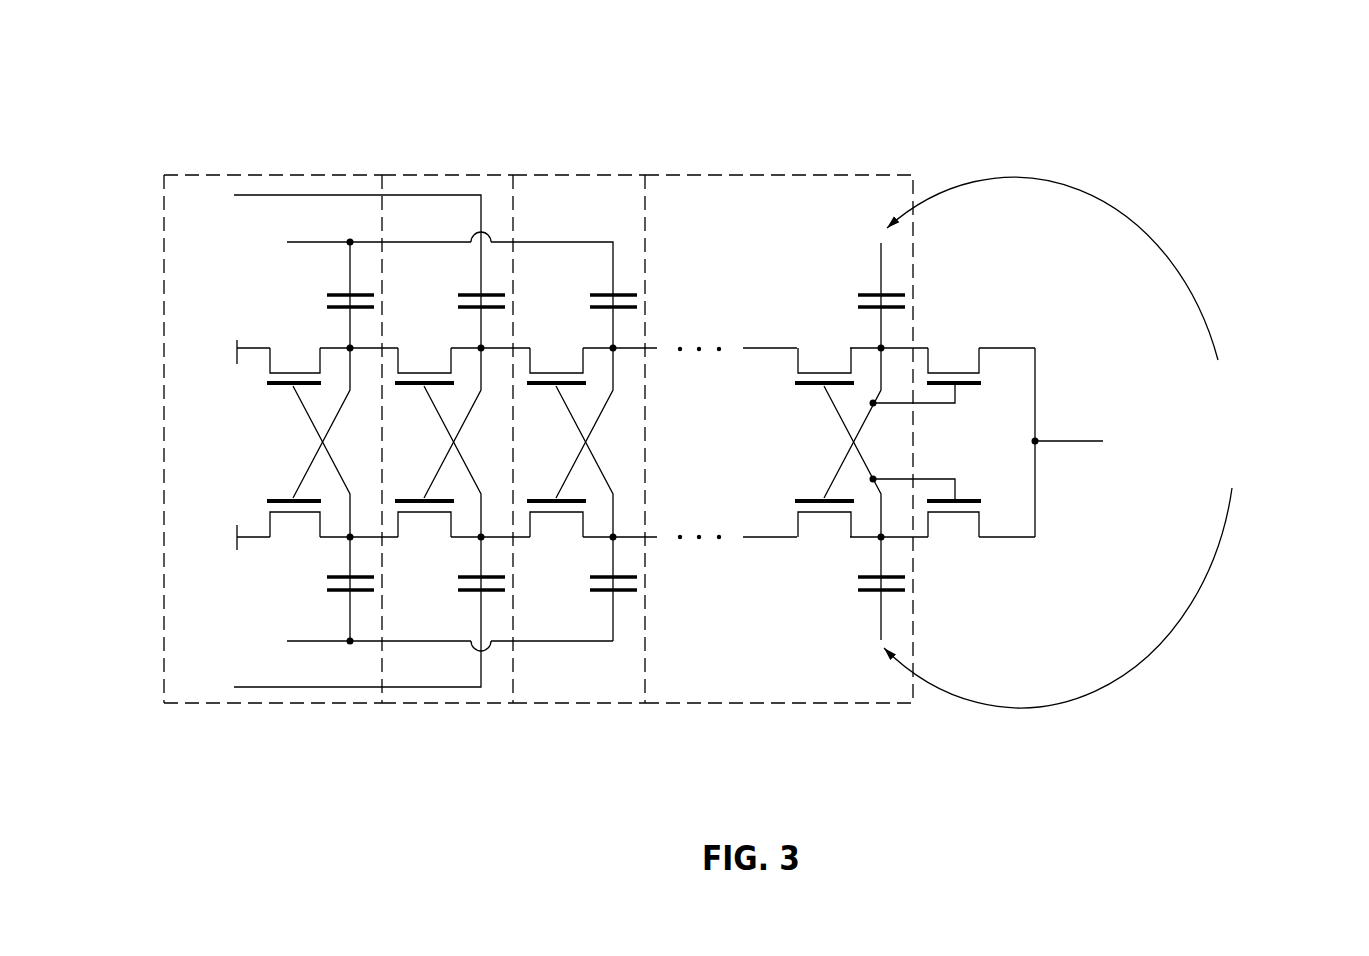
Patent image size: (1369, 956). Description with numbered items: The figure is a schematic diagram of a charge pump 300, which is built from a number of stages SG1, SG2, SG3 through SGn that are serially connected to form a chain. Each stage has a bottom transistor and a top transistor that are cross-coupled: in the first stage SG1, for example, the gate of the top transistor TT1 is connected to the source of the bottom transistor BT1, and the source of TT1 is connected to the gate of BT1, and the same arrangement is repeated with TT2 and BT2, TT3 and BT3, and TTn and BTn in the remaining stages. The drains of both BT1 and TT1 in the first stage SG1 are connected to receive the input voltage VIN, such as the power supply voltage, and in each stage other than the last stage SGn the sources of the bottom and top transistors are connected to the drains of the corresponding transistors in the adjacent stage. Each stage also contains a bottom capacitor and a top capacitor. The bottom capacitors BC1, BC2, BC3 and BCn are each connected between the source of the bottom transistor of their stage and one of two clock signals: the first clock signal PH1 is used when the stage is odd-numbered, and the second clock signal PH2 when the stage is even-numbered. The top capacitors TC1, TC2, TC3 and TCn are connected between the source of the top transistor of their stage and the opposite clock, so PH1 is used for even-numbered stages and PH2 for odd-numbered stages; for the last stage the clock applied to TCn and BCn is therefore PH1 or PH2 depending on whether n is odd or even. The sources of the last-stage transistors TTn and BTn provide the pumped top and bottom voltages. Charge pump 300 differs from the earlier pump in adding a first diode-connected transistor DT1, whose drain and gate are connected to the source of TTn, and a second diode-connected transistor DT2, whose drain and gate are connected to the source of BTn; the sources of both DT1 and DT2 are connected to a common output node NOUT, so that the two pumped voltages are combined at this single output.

The charge pump 300 is at (1110, 132).
The first stage SG1 is at (270, 175).
The second stage SG2 is at (423, 175).
The third stage SG3 is at (578, 175).
The last stage SGn is at (837, 175).
The first clock signal PH1 is at (353, 195).
The second clock signal PH2 is at (320, 241).
The input voltage VIN is at (221, 447).
The top capacitor of first stage TC1 is at (335, 280).
The top capacitor of second stage TC2 is at (466, 280).
The top capacitor of third stage TC3 is at (598, 280).
The top capacitor of last stage TCn is at (868, 277).
The top transistor of first stage TT1 is at (298, 358).
The top transistor of second stage TT2 is at (429, 358).
The top transistor of third stage TT3 is at (561, 358).
The top transistor of last stage TTn is at (828, 357).
The bottom transistor of first stage BT1 is at (298, 525).
The bottom transistor of second stage BT2 is at (429, 525).
The bottom transistor of third stage BT3 is at (561, 525).
The bottom transistor of last stage BTn is at (828, 525).
The bottom capacitor of first stage BC1 is at (330, 602).
The bottom capacitor of second stage BC2 is at (461, 602).
The bottom capacitor of third stage BC3 is at (593, 602).
The bottom capacitor of last stage BCn is at (858, 605).
The first diode-connected transistor DT1 is at (960, 357).
The second diode-connected transistor DT2 is at (960, 525).
The output node NOUT is at (1104, 442).